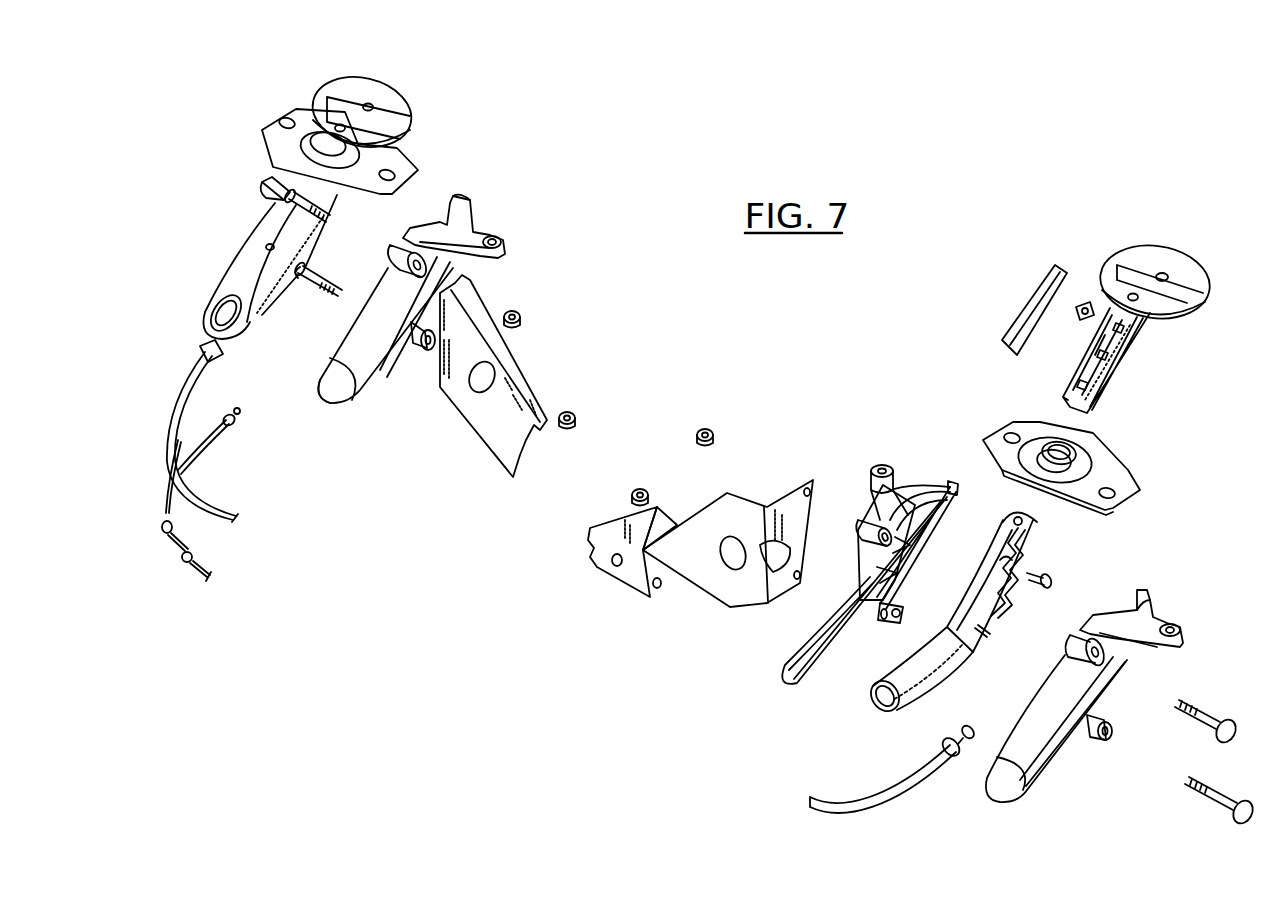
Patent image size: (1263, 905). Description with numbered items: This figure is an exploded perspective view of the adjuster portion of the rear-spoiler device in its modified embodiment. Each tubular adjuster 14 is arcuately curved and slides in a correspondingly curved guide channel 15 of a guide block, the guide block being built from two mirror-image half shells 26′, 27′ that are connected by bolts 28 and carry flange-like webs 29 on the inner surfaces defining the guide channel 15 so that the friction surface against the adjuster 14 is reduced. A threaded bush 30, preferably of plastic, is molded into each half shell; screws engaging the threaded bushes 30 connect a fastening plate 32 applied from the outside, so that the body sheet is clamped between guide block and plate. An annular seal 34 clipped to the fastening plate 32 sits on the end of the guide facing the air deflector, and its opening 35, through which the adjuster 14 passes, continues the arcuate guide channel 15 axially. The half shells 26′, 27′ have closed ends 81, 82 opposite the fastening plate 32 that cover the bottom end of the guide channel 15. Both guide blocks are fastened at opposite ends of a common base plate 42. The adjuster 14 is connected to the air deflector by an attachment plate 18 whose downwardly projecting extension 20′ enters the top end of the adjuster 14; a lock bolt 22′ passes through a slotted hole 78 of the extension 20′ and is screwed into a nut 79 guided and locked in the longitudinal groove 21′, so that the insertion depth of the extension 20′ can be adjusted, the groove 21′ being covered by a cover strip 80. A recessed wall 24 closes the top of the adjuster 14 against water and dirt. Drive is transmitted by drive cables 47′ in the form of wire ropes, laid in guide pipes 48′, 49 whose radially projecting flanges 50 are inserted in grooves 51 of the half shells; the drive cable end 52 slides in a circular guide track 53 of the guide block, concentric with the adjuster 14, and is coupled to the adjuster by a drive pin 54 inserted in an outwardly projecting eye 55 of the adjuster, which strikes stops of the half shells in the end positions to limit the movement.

The adjuster 14 is at (270, 292).
The guide channel 15 is at (270, 247).
The attachment plate 18 is at (385, 105).
The extension 20′ is at (1125, 362).
The longitudinal groove 21′ is at (1087, 363).
The lock bolt 22′ is at (1055, 580).
The recessed wall 24 is at (957, 627).
The half shell 26′ is at (248, 270).
The half shell 27′ is at (380, 347).
The bolts 28 is at (338, 290).
The flange-like webs 29 is at (917, 507).
The threaded bush 30 is at (500, 238).
The fastening plate 32 is at (407, 153).
The annular seal 34 is at (300, 148).
The opening 35 is at (1075, 450).
The base plate 42 is at (495, 435).
The drive cables 47′ is at (197, 574).
The guide pipe 48′ is at (180, 392).
The guide pipe 49 is at (853, 802).
The flanges 50 is at (202, 350).
The grooves 51 is at (888, 624).
The drive cable end 52 is at (975, 733).
The guide track 53 is at (930, 532).
The drive pin 54 is at (988, 640).
The eye 55 is at (978, 630).
The slotted hole 78 is at (1117, 330).
The nut 79 is at (1085, 300).
The cover strip 80 is at (1030, 302).
The closed end 81 is at (203, 322).
The closed end 82 is at (323, 393).